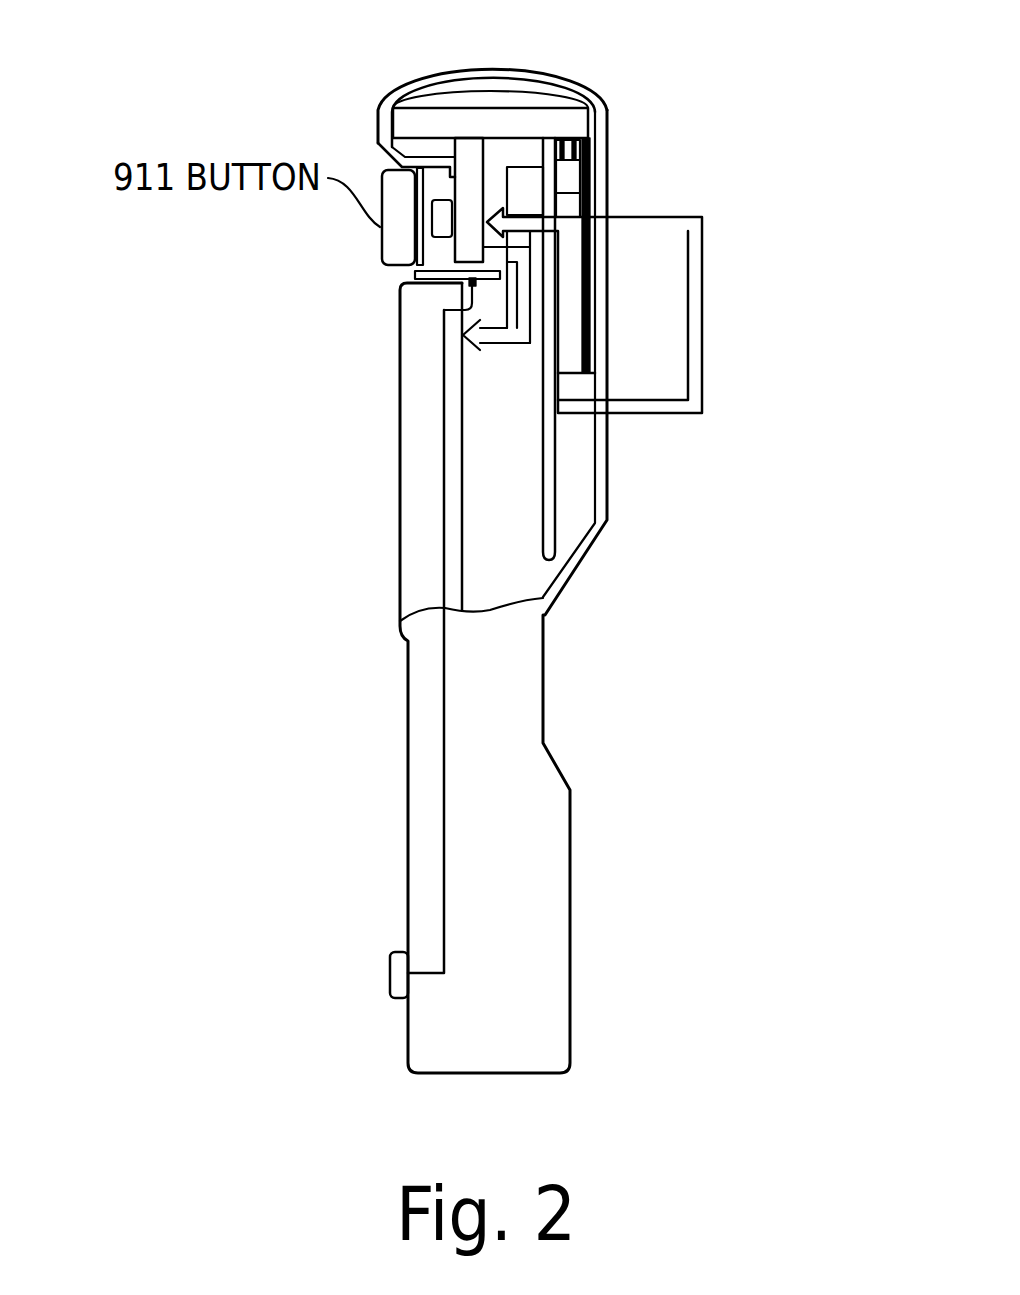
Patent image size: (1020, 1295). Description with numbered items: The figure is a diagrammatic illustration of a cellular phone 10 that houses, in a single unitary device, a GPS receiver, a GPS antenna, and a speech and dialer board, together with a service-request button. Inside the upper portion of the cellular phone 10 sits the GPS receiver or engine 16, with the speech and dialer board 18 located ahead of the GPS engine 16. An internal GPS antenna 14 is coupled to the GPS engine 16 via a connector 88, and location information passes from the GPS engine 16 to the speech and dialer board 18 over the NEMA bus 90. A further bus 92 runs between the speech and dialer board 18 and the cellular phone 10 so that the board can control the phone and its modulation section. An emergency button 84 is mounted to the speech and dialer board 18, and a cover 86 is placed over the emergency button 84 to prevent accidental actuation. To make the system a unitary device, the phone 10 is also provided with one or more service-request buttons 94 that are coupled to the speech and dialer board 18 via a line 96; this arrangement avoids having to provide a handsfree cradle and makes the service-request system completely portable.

The cellular phone 10 is at (320, 566).
The GPS antenna 14 is at (570, 118).
The GPS receiver 16 is at (568, 207).
The speech and dialer board 18 is at (455, 262).
The emergency button 84 is at (432, 228).
The cover 86 is at (380, 177).
The connector 88 is at (568, 177).
The NEMA 0183 bus 90 is at (702, 300).
The bus 92 is at (490, 344).
The service-request button 94 is at (390, 975).
The line 96 is at (444, 884).